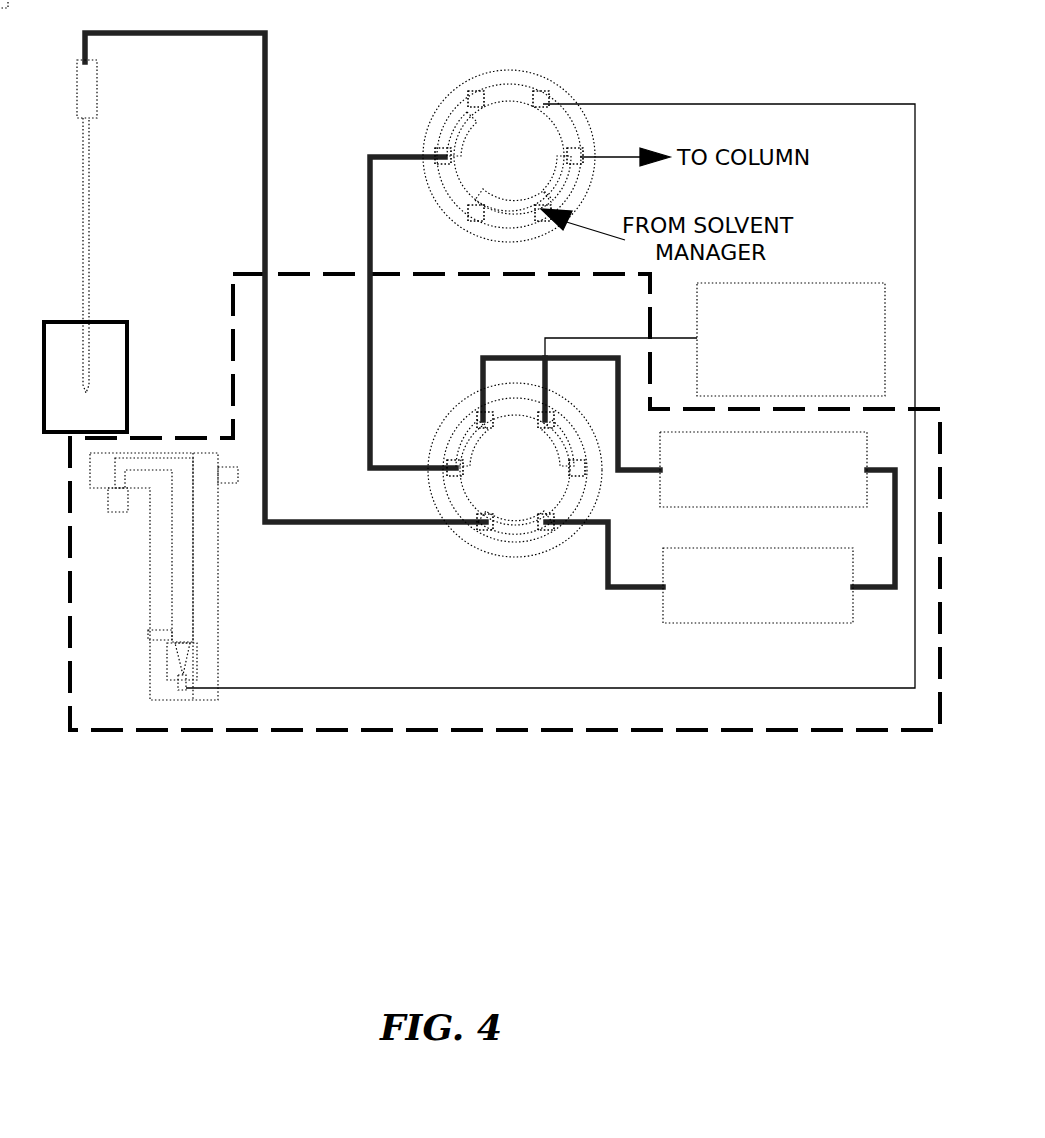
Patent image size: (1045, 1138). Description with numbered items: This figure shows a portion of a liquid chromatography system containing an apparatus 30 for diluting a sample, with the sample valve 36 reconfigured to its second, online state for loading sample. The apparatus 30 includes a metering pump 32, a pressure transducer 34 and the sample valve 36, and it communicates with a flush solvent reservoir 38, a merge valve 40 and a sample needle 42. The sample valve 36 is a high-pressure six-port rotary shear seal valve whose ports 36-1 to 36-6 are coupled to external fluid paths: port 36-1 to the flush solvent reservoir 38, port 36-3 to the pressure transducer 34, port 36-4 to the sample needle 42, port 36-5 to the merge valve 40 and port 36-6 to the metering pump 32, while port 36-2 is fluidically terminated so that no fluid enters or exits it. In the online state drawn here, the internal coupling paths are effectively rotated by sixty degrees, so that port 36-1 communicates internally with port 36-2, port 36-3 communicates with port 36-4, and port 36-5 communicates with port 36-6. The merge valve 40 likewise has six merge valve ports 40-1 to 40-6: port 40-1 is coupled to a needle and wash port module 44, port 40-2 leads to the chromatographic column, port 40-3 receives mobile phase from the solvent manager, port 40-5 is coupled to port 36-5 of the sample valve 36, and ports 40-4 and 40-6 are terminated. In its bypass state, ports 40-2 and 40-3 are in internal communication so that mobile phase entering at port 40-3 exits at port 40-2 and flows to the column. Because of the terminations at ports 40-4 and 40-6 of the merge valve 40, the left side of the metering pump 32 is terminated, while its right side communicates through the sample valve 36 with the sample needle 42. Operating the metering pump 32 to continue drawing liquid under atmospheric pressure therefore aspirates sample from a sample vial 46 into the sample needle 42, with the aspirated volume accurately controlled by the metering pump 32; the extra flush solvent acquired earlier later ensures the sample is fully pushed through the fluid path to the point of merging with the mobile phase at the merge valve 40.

The apparatus for diluting a sample 30 is at (232, 292).
The metering pump 32 is at (763, 469).
The pressure transducer 34 is at (758, 585).
The sample valve 36 is at (515, 470).
The sample valve port 36-1 is at (550, 420).
The sample valve port 36-2 is at (581, 474).
The sample valve port 36-3 is at (549, 526).
The sample valve port 36-4 is at (486, 526).
The sample valve port 36-5 is at (456, 465).
The sample valve port 36-6 is at (483, 420).
The flush solvent reservoir 38 is at (791, 339).
The merge valve 40 is at (297, 121).
The merge valve port 40-1 is at (541, 103).
The merge valve port 40-2 is at (575, 154).
The merge valve port 40-3 is at (546, 216).
The merge valve port 40-4 is at (477, 215).
The merge valve port 40-5 is at (448, 150).
The merge valve port 40-6 is at (472, 107).
The sample needle 42 is at (83, 215).
The needle and wash port module 44 is at (218, 626).
The sample vial 46 is at (128, 362).